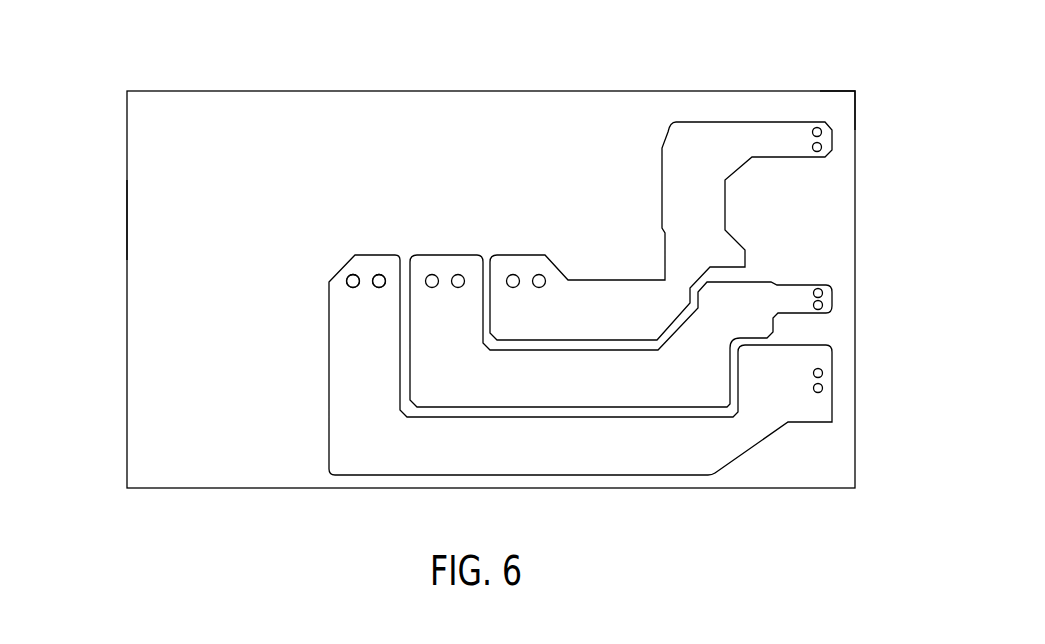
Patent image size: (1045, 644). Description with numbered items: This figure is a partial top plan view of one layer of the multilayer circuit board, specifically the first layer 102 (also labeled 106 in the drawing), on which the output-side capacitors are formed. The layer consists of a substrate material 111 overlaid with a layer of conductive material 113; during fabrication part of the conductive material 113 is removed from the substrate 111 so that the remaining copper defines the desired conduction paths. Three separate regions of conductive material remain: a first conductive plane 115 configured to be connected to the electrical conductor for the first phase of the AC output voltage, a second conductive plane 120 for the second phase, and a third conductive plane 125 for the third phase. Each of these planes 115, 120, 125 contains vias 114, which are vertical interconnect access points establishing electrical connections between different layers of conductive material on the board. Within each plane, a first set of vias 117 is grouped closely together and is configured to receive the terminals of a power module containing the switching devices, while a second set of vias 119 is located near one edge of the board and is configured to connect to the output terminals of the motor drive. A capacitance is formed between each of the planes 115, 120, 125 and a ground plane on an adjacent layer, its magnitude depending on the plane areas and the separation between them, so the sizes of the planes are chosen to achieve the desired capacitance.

The first layer 102 is at (443, 255).
The circuit layer 106 is at (188, 91).
The substrate material 111 is at (140, 228).
The conductive material 113 is at (545, 298).
The vias 114 is at (379, 274).
The first conductive plane 115 is at (352, 390).
The first set of vias 117 is at (353, 172).
The second set of vias 119 is at (913, 90).
The second conductive plane 120 is at (590, 380).
The third conductive plane 125 is at (670, 172).